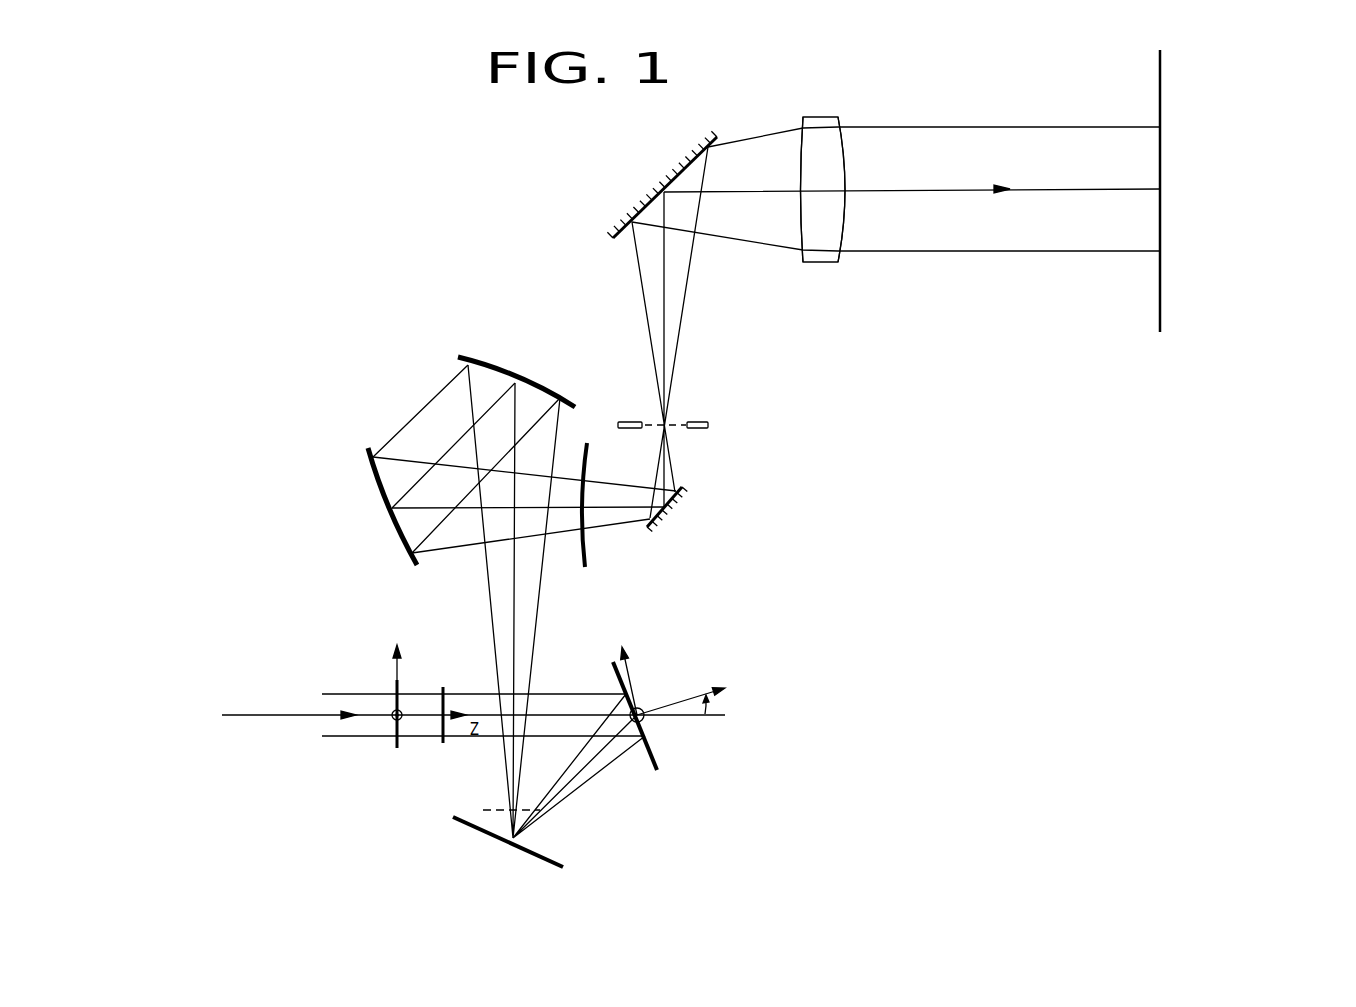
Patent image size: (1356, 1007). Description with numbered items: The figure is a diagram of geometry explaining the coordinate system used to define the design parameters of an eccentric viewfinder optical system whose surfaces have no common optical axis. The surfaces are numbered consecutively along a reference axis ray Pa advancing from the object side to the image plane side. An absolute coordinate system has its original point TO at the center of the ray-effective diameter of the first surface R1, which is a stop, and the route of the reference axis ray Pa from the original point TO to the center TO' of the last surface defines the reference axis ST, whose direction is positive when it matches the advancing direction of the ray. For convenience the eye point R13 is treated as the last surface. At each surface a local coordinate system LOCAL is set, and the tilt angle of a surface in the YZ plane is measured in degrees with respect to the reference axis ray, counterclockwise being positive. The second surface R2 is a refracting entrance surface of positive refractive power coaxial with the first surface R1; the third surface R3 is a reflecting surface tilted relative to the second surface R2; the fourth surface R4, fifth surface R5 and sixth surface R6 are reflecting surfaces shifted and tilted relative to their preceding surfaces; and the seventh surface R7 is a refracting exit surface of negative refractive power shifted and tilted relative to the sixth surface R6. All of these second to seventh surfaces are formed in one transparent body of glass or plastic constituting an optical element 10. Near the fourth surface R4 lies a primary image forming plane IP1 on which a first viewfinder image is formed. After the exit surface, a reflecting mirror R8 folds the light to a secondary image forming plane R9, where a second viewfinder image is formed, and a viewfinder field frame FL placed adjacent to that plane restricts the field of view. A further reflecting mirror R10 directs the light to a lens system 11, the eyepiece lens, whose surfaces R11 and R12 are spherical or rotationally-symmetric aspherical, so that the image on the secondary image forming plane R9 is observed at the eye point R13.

The optical element 10 is at (415, 392).
The lens system (eyepiece lens) 11 is at (830, 109).
The first surface R1 is at (397, 690).
The second surface R2 is at (445, 688).
The third surface R3 is at (657, 750).
The fourth surface R4 is at (503, 843).
The fifth surface R5 is at (507, 372).
The sixth surface R6 is at (372, 477).
The seventh surface R7 is at (587, 555).
The reflecting mirror R8 is at (668, 510).
The secondary image forming plane R9 is at (688, 430).
The reflecting mirror R10 is at (652, 193).
The eyepiece lens surface R11 is at (802, 262).
The eyepiece lens surface R12 is at (838, 262).
The eye point R13 is at (1160, 290).
The viewfinder field frame FL is at (690, 428).
The primary image forming plane IP1 is at (497, 803).
The reference axis ST is at (297, 715).
The original point of absolute coordinate system TO is at (282, 779).
The center of the last surface TO' is at (1202, 149).
The reference axis ray Pa is at (1068, 188).
The local coordinate system LOCAL is at (645, 722).